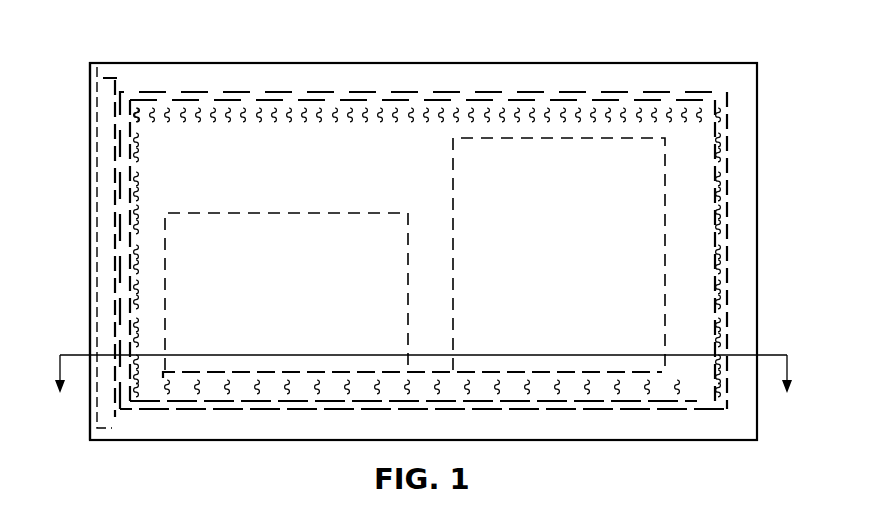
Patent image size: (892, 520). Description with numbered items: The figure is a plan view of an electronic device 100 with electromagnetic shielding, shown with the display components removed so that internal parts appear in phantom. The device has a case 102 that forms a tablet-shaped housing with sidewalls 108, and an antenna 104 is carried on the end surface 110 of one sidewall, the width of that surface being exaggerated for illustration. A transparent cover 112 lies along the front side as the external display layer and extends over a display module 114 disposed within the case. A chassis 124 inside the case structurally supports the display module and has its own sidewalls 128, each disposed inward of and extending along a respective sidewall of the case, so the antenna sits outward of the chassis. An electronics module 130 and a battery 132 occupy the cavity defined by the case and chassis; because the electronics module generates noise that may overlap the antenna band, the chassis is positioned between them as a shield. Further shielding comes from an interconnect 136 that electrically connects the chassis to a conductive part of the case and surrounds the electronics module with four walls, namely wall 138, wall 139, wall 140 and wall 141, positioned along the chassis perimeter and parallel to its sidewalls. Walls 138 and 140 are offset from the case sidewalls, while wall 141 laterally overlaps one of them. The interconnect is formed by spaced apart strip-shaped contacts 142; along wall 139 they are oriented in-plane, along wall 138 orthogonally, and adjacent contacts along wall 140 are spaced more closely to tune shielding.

The electronic device 100 is at (717, 30).
The case 102 is at (220, 63).
The antenna 104 is at (97, 170).
The sidewalls 108 is at (370, 63).
The end surface 110 is at (109, 64).
The transparent cover 112 is at (415, 219).
The display module 114 is at (712, 197).
The chassis 124 is at (603, 92).
The sidewalls 128 is at (115, 180).
The electronics module 130 is at (286, 291).
The battery 132 is at (559, 254).
The interconnect 136 is at (573, 392).
The wall 138 is at (180, 392).
The wall 139 is at (145, 157).
The wall 140 is at (162, 100).
The wall 141 is at (719, 124).
The contacts 142 is at (280, 384).